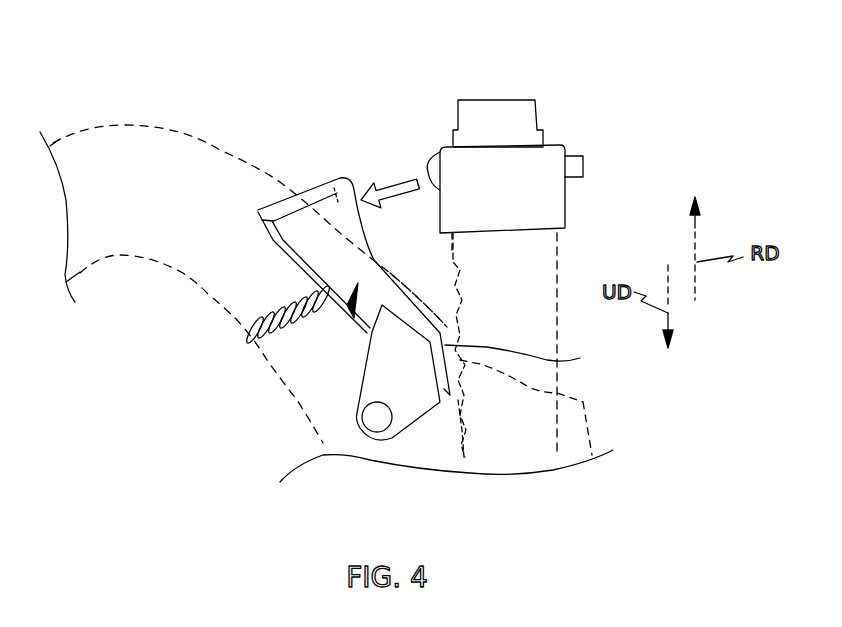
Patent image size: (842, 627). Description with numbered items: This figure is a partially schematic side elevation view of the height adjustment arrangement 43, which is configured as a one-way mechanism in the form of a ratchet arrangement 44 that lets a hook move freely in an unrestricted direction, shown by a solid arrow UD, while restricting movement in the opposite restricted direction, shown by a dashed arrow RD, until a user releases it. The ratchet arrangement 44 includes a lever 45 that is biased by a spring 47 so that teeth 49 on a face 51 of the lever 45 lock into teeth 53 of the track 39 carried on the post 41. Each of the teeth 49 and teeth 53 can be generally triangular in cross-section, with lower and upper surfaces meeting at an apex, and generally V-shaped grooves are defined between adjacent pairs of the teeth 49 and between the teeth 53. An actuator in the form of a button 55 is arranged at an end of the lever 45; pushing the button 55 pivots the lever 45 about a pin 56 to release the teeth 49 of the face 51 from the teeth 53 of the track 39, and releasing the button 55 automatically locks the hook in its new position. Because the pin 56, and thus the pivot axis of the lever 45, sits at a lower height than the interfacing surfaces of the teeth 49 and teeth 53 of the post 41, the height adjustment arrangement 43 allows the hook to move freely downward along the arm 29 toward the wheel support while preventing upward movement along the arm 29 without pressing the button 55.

The arm 29 is at (548, 52).
The track 39 is at (452, 287).
The post 41 is at (557, 247).
The height adjustment arrangement 43 is at (347, 118).
The ratchet arrangement 44 is at (482, 330).
The lever 45 is at (357, 300).
The spring 47 is at (258, 302).
The teeth 49 is at (527, 358).
The face 51 is at (473, 390).
The teeth 53 is at (465, 453).
The button 55 is at (322, 184).
The pin 56 is at (372, 413).